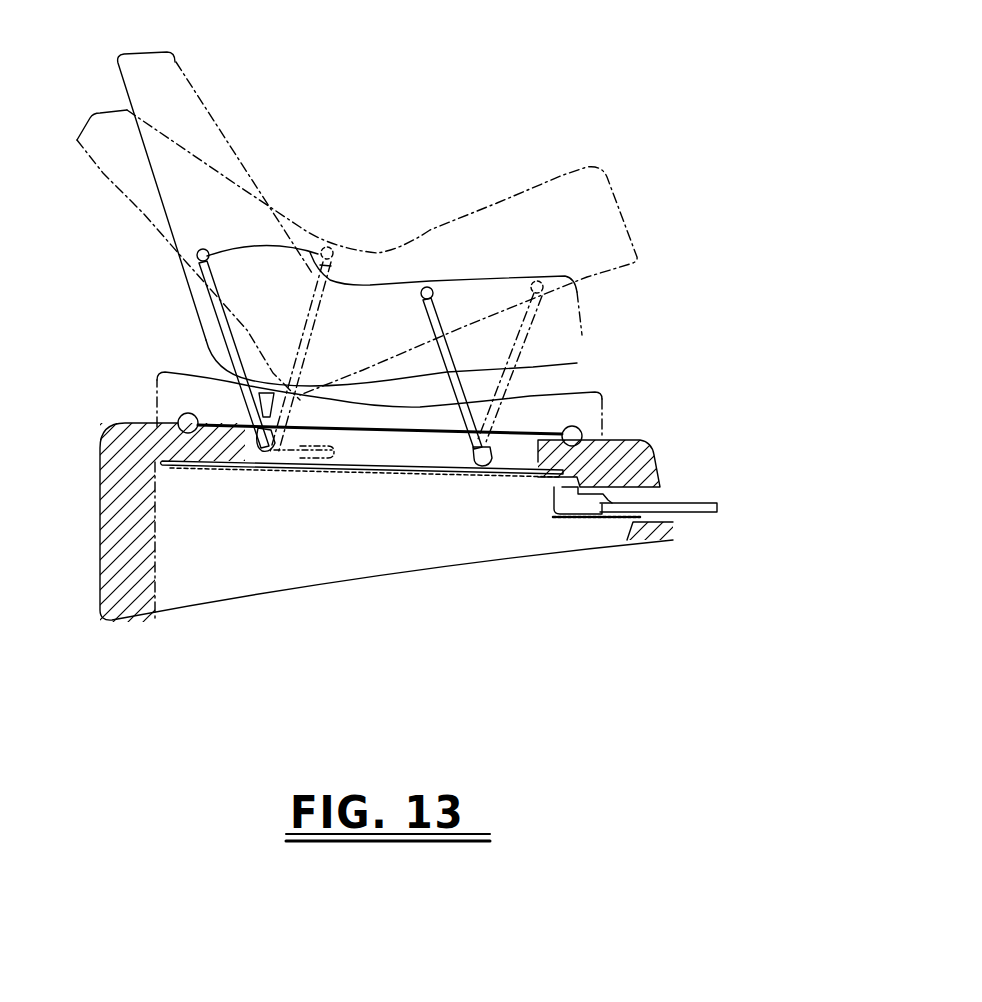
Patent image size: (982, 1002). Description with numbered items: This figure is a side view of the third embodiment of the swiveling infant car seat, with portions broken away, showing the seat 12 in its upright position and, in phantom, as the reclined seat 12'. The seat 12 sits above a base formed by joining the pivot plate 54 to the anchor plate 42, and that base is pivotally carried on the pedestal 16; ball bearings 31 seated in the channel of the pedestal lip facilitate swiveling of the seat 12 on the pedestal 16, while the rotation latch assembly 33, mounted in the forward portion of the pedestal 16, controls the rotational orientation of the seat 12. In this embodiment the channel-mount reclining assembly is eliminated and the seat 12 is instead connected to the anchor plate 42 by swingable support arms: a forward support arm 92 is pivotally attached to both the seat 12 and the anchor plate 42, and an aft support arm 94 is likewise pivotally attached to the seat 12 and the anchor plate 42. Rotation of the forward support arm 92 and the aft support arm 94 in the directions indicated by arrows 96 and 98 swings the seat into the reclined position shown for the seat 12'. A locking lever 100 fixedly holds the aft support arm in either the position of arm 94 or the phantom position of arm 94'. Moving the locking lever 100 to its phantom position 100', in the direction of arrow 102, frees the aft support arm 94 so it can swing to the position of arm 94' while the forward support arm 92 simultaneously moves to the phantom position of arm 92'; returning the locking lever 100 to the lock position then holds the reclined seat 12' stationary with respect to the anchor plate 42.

The seat 12 is at (347, 196).
The seat in reclined position 12' is at (357, 206).
The pedestal 16 is at (124, 627).
The ball bearings 31 is at (179, 421).
The rotation latch assembly 33 is at (693, 518).
The anchor plate 42 is at (465, 480).
The pivot plate 54 is at (152, 378).
The forward support arm 92 is at (575, 376).
The forward support arm in reclined position 92' is at (608, 361).
The aft support arm 94 is at (143, 348).
The aft support arm in reclined position 94' is at (346, 231).
The arrow 96 is at (258, 243).
The arrow 98 is at (490, 279).
The locking lever 100 is at (227, 564).
The locking lever in released position 100' is at (304, 573).
The arrow 102 is at (289, 404).